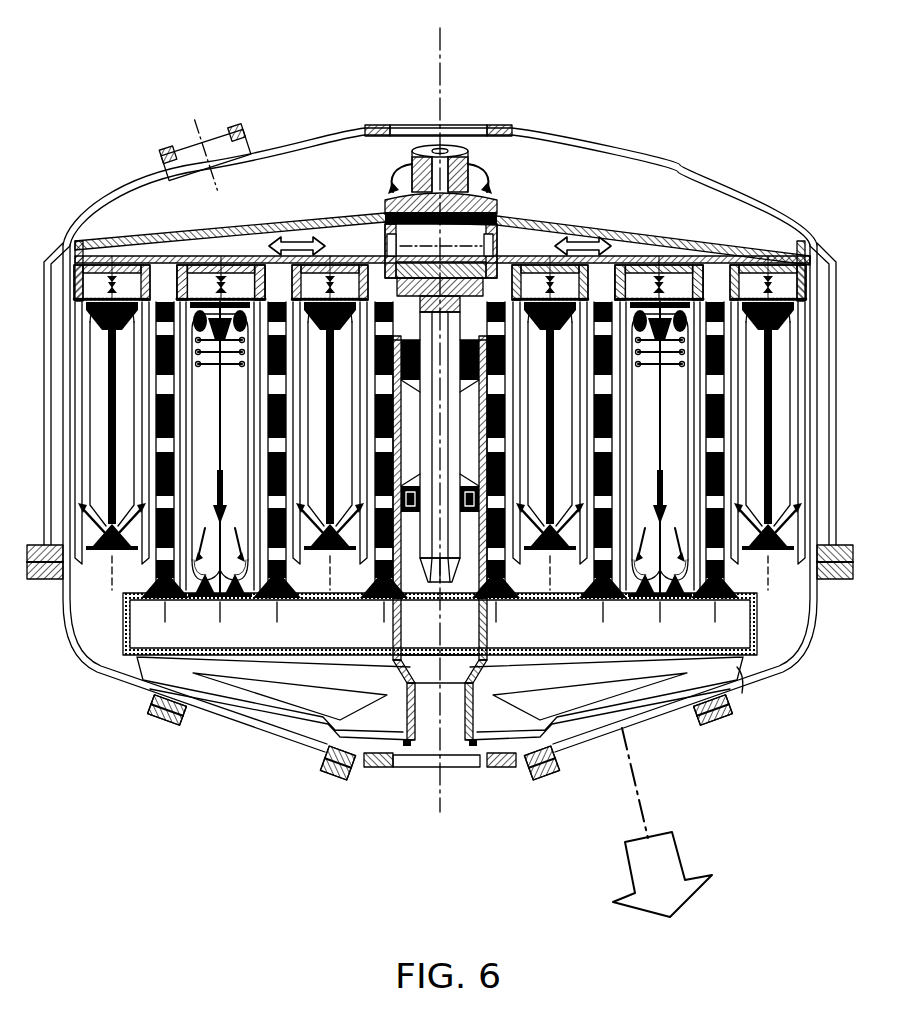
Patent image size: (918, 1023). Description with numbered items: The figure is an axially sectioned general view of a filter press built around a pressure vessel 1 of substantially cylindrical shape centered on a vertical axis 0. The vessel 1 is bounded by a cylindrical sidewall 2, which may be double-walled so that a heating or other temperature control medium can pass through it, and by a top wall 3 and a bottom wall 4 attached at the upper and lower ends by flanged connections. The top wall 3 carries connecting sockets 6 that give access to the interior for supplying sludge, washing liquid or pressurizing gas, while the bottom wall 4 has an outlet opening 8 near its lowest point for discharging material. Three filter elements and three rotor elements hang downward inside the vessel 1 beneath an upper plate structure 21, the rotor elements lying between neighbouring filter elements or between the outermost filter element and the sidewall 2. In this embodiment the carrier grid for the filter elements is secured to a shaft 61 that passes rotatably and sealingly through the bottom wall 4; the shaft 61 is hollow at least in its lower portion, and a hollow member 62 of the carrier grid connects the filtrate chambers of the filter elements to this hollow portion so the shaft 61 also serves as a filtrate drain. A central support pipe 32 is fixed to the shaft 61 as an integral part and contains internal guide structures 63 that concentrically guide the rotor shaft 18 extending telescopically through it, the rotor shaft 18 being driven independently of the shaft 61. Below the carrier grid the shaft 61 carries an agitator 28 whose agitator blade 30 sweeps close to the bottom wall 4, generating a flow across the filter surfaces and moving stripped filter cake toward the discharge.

The vertical axis 0 is at (445, 60).
The pressure vessel 1 is at (777, 212).
The cylindrical sidewall 2 is at (828, 270).
The top wall 3 is at (655, 163).
The bottom wall 4 is at (97, 672).
The connecting sockets 6 is at (243, 135).
The outlet opening 8 is at (196, 728).
The rotor shaft 18 is at (468, 162).
The header plate 21 is at (672, 237).
The agitator 28 is at (293, 673).
The agitator blade 30 is at (305, 715).
The central support pipe 32 is at (421, 600).
The shaft 61 is at (423, 727).
The hollow member of carrier grid 62 is at (742, 693).
The internal guide structures 63 is at (475, 340).